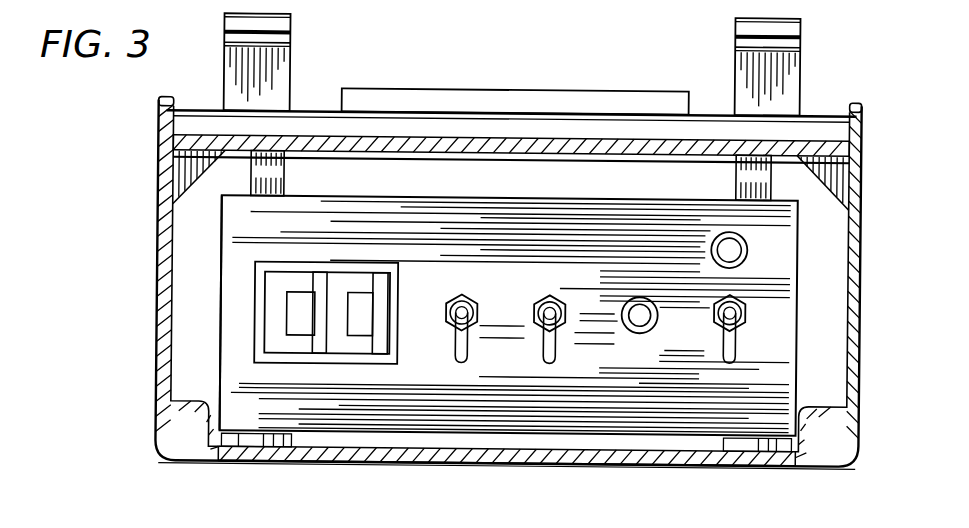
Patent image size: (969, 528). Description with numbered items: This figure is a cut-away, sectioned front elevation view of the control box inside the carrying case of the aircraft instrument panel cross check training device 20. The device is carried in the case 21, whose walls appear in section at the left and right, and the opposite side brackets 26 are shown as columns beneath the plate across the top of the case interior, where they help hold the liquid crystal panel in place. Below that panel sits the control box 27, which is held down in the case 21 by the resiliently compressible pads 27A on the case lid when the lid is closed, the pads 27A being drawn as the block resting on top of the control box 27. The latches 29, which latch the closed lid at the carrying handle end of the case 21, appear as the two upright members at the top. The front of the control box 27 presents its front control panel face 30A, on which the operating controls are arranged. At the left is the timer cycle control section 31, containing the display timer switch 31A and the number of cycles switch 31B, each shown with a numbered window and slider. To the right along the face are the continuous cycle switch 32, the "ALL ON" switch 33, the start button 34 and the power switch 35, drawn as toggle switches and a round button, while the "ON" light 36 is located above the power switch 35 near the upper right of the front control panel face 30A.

The aircraft instrument panel cross check training device 20 is at (220, 259).
The case 21 is at (157, 366).
The opposite side brackets 26 is at (252, 173).
The control box 27 is at (797, 265).
The resiliently compressible pads 27A is at (448, 91).
The latches 29 is at (283, 55).
The front control panel face 30A is at (470, 197).
The timer cycle control section 31 is at (311, 259).
The display timer switch 31A is at (325, 346).
The number of cycles switch 31B is at (386, 346).
The continuous cycle switch 32 is at (482, 322).
The "ALL ON" switch 33 is at (571, 326).
The start button 34 is at (646, 332).
The power switch 35 is at (750, 318).
The "ON" light 36 is at (732, 245).